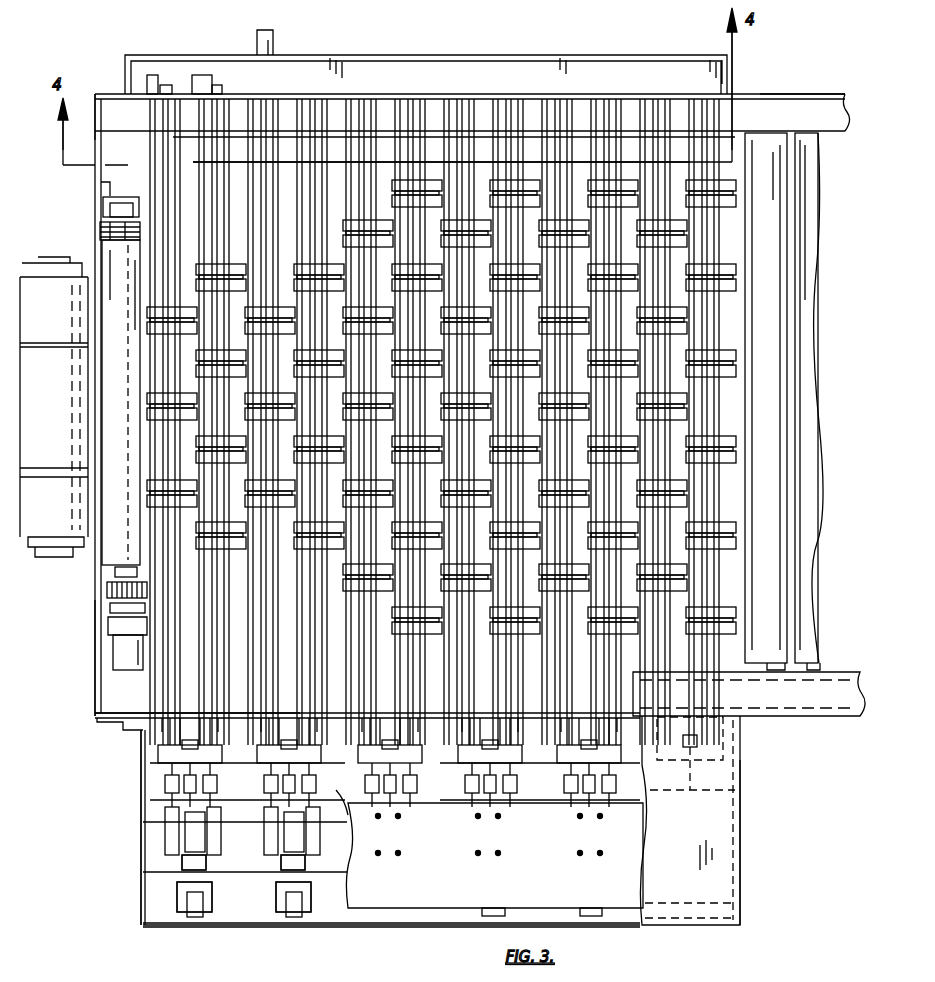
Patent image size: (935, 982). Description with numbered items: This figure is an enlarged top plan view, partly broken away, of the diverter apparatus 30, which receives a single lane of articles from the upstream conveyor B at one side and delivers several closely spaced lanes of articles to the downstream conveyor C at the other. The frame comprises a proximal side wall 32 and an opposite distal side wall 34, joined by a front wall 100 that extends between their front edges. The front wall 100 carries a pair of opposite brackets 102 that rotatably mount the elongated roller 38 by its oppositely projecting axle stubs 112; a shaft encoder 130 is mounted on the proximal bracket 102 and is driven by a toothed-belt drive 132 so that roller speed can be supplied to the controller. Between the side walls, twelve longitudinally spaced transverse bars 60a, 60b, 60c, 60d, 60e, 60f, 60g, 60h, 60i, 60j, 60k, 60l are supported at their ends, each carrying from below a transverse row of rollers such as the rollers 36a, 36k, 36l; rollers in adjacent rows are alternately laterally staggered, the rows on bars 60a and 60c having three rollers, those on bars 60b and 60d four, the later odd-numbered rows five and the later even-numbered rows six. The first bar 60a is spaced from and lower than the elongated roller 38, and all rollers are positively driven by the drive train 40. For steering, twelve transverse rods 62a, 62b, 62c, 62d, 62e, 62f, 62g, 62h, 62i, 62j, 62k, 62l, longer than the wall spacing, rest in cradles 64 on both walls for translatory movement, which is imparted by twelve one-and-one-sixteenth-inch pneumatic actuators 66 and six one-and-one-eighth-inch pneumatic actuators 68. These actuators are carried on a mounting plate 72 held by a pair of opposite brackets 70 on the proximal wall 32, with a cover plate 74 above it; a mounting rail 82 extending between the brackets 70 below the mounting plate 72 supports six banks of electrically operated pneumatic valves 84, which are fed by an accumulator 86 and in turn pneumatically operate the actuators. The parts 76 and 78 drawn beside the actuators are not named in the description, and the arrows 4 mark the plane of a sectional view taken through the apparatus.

The diverter apparatus 30 is at (805, 66).
The proximal side wall 32 is at (100, 720).
The distal side wall 34 is at (104, 94).
The roller 36a is at (160, 500).
The roller 36k is at (690, 580).
The roller 36l is at (735, 282).
The elongated roller 38 is at (108, 272).
The drive train 40 is at (332, 158).
The first transverse bar 60a is at (170, 108).
The second transverse bar 60b is at (224, 110).
The third transverse bar 60c is at (266, 115).
The fourth transverse bar 60d is at (338, 160).
The transverse bar 60e is at (372, 160).
The transverse bar 60f is at (452, 150).
The transverse bar 60g is at (474, 150).
The transverse bar 60h is at (517, 150).
The transverse bar 60i is at (566, 140).
The transverse bar 60j is at (608, 140).
The transverse bar 60k is at (662, 140).
The transverse bar 60l is at (715, 140).
The transverse rod 62a is at (155, 75).
The transverse rod 62b is at (205, 180).
The transverse rod 62c is at (275, 105).
The transverse rod 62d is at (325, 130).
The transverse rod 62e is at (362, 160).
The transverse rod 62f is at (427, 150).
The transverse rod 62g is at (462, 150).
The transverse rod 62h is at (508, 150).
The transverse rod 62i is at (555, 130).
The transverse rod 62j is at (612, 130).
The transverse rod 62k is at (655, 130).
The transverse rod 62l is at (716, 140).
The cradle 64 is at (150, 75).
The pneumatic actuator 66 is at (166, 835).
The pneumatic actuator 68 is at (182, 865).
The bracket 70 is at (142, 890).
The mounting plate 72 is at (456, 898).
The cover plate 74 is at (717, 853).
The bracket 76 is at (165, 752).
The bar 78 is at (160, 764).
The mounting rail 82 is at (322, 920).
The pneumatic valves 84 is at (190, 918).
The accumulator 86 is at (340, 795).
The front wall 100 is at (96, 680).
The brackets 102 is at (106, 186).
The axle stubs 112 is at (115, 235).
The shaft encoder 130 is at (127, 666).
The toothed-belt drive 132 is at (110, 592).
The upstream conveyor B is at (35, 300).
The downstream conveyor C is at (810, 190).
The section line 4- 4 is at (392, 85).